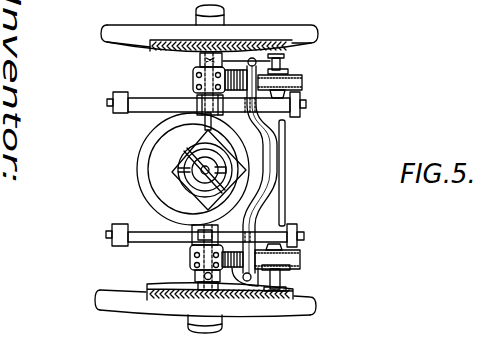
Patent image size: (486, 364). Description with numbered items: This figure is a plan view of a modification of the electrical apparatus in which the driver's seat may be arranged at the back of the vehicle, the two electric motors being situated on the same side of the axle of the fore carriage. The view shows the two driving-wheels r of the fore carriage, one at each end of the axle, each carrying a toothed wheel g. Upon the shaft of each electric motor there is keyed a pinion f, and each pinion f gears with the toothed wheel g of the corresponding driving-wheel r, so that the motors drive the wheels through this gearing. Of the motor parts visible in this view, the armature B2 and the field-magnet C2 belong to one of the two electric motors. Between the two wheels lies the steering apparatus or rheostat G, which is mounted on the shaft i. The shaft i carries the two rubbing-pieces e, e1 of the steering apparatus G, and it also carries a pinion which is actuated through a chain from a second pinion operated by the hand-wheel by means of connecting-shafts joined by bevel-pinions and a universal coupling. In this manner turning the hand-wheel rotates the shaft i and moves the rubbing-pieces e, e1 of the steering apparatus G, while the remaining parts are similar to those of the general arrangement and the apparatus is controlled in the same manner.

The driving-wheel r is at (115, 33).
The toothed wheel g is at (148, 55).
The pinion f is at (268, 58).
The armature B2 is at (302, 78).
The field-magnet C2 is at (298, 97).
The steering apparatus or rheostat G is at (192, 148).
The rubbing-piece e is at (200, 170).
The rubbing-piece e1 is at (238, 182).
The shaft i is at (228, 160).